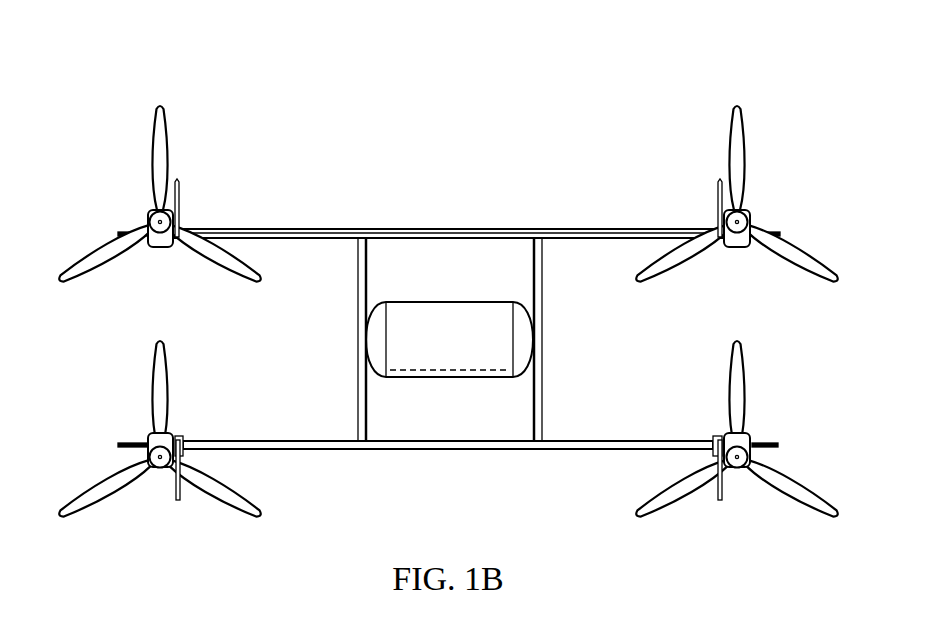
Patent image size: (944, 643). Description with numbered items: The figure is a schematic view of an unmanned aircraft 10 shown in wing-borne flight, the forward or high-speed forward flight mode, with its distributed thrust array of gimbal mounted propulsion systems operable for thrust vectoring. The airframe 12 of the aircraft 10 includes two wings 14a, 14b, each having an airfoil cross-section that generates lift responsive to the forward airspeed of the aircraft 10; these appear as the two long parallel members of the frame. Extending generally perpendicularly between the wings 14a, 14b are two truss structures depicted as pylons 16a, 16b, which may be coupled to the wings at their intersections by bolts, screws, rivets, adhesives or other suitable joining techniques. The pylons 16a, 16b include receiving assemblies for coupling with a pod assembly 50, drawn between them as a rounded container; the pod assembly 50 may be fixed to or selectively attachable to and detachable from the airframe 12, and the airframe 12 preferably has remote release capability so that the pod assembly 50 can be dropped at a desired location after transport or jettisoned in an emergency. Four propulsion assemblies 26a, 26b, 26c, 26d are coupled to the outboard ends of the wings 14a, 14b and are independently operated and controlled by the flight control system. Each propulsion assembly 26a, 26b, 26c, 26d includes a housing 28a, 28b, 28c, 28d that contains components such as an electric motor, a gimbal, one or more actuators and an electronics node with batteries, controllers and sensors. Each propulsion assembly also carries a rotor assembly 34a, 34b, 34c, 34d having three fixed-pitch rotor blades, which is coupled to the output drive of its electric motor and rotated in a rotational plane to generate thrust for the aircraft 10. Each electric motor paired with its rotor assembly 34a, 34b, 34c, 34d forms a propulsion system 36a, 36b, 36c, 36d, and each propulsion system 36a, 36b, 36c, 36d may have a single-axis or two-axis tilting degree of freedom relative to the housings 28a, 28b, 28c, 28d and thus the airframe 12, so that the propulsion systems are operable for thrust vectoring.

The aircraft 10 is at (290, 112).
The airframe 12 is at (579, 220).
The wing 14a is at (317, 450).
The wing 14b is at (327, 229).
The pylon 16a is at (356, 374).
The pylon 16b is at (545, 300).
The propulsion assembly 26a is at (148, 436).
The propulsion assembly 26b is at (751, 436).
The propulsion assembly 26c is at (740, 248).
The propulsion assembly 26d is at (157, 248).
The housing 28a is at (174, 436).
The housing 28b is at (724, 436).
The housing 28c is at (725, 249).
The housing 28d is at (172, 249).
The rotor assembly 34a is at (95, 488).
The rotor assembly 34b is at (803, 488).
The rotor assembly 34c is at (744, 148).
The rotor assembly 34d is at (151, 148).
The propulsion system 36a is at (157, 478).
The propulsion system 36b is at (739, 478).
The propulsion system 36c is at (757, 212).
The propulsion system 36d is at (140, 212).
The pod assembly 50 is at (436, 353).